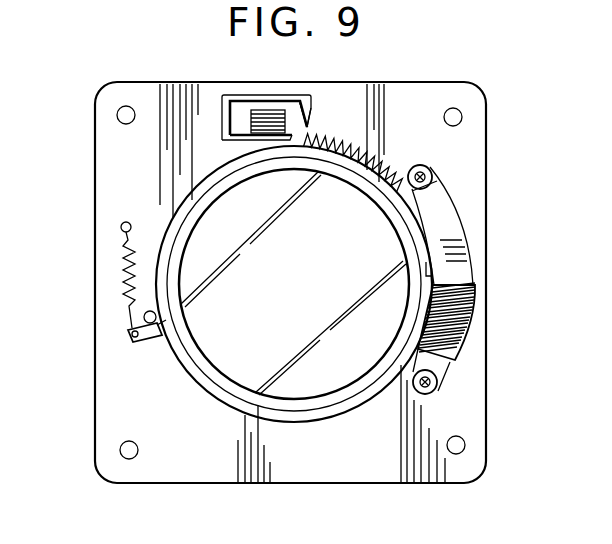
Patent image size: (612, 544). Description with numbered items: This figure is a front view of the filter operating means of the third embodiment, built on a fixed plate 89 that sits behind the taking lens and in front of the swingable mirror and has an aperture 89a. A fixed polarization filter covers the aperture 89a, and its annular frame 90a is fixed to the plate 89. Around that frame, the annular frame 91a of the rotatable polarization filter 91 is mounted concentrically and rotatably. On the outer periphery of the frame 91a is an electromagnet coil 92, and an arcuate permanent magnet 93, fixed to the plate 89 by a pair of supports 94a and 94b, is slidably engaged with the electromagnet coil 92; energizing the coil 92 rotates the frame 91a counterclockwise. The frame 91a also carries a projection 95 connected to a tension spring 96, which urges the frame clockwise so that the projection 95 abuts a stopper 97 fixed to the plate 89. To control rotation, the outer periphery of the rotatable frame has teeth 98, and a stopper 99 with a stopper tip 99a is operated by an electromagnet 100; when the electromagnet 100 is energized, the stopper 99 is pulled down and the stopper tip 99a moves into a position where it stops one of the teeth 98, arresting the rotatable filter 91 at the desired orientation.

The fixed plate 89 is at (470, 442).
The aperture 89a is at (312, 391).
The annular frame of the fixed polarization filter 90a is at (339, 172).
The rotatable polarization filter 91 is at (231, 362).
The annular frame of the rotatable polarization filter 91a is at (202, 186).
The electromagnet coil 92 is at (470, 318).
The arcuate permanent magnet 93 is at (456, 233).
The support 94a is at (428, 180).
The support 94b is at (436, 390).
The projection 95 is at (145, 338).
The tension spring 96 is at (120, 291).
The stopper 97 is at (152, 343).
The teeth 98 is at (372, 164).
The stopper 99 is at (270, 101).
The stopper tip 99a is at (312, 108).
The electromagnet 100 is at (250, 121).